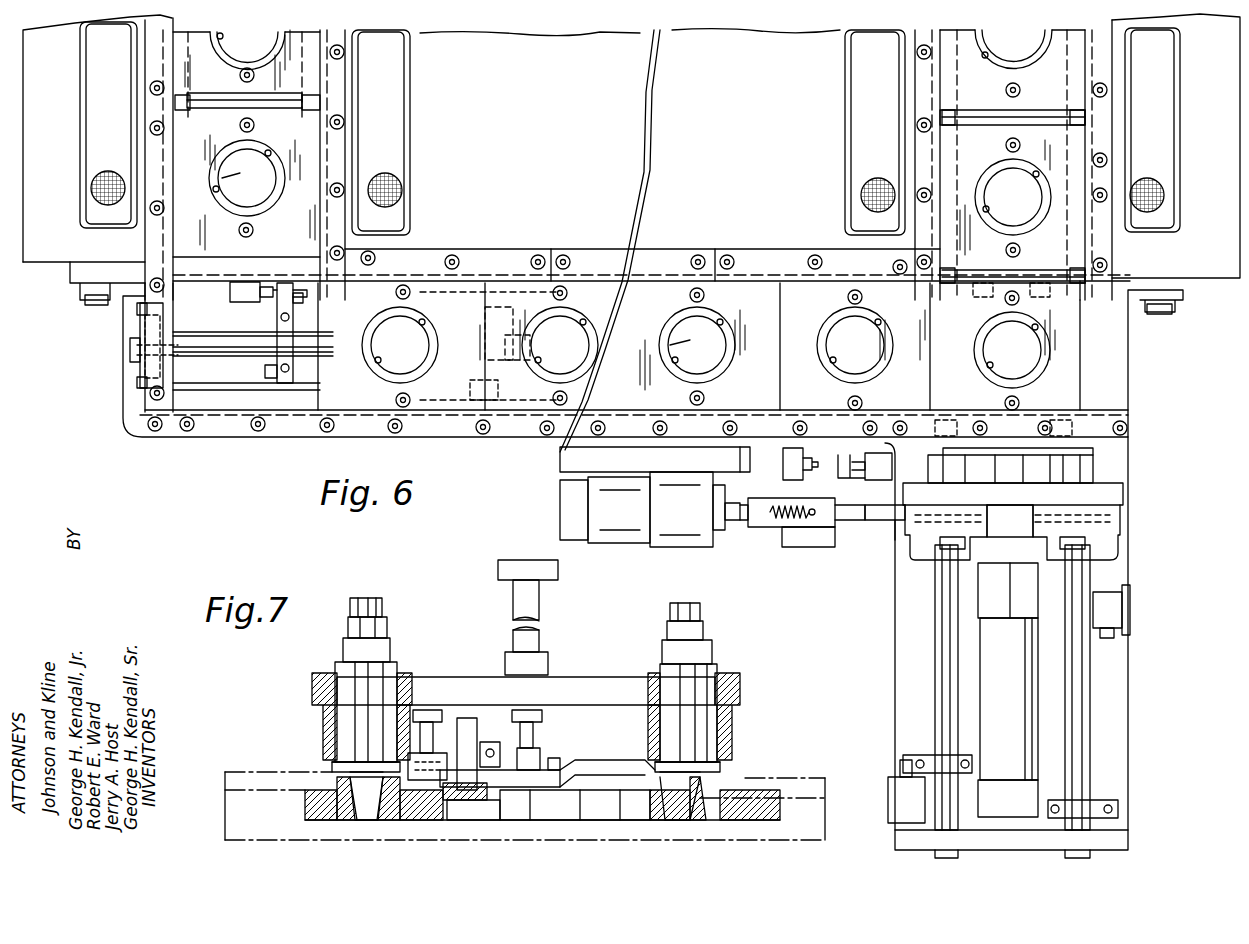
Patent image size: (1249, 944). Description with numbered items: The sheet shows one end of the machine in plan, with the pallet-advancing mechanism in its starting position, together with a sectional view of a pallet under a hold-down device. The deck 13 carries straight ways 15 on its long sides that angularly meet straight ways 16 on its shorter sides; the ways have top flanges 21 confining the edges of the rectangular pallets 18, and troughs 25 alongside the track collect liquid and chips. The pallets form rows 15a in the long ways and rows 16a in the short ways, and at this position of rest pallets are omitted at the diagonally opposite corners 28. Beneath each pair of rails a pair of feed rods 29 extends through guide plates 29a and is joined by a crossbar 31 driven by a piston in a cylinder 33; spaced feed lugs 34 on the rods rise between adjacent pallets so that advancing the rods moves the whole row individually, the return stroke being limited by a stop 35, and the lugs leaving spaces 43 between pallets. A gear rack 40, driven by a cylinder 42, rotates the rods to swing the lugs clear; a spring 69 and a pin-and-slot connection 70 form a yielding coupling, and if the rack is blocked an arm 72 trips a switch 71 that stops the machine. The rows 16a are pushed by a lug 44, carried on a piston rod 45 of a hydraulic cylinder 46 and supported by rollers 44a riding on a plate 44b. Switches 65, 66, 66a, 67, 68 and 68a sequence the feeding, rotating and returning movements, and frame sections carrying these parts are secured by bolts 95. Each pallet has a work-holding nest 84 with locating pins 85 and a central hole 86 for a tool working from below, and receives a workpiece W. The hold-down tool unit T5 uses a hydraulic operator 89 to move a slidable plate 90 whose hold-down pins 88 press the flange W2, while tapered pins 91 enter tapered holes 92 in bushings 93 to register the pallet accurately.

In FIG. 6, the deck 13 is at (586, 58).
In FIG. 6, the straight ways 15 is at (140, 60).
In FIG. 6, the rows of pallets 15a is at (300, 44).
In FIG. 6, the straight ways 16 is at (527, 455).
In FIG. 6, the rows of pallets 16a is at (658, 288).
In FIG. 6, the pallet 18 is at (345, 70).
In FIG. 7, the pallet 18 is at (740, 812).
In FIG. 6, the top flange 21 is at (150, 238).
In FIG. 6, the trough 25 is at (100, 130).
In FIG. 6, the corner 28 is at (214, 430).
In FIG. 6, the feed rod 29 is at (935, 652).
In FIG. 6, the guide plate 29a is at (1143, 529).
In FIG. 6, the crossbar 31 is at (1095, 470).
In FIG. 6, the cylinder 33 is at (1005, 692).
In FIG. 6, the feed lug 34 is at (175, 100).
In FIG. 6, the stop 35 is at (1125, 492).
In FIG. 6, the gear rack 40 is at (893, 525).
In FIG. 6, the cylinder 42 is at (633, 520).
In FIG. 6, the space 43 is at (1040, 116).
In FIG. 6, the lug 44 is at (140, 360).
In FIG. 6, the roller 44a is at (140, 308).
In FIG. 6, the plate 44b is at (252, 400).
In FIG. 6, the piston rod 45 is at (232, 348).
In FIG. 6, the hydraulic cylinder 46 is at (606, 290).
In FIG. 6, the switch 65 is at (1127, 605).
In FIG. 6, the switch 66 is at (790, 466).
In FIG. 6, the switch 66a is at (880, 480).
In FIG. 6, the switch 67 is at (900, 803).
In FIG. 6, the switch 68 is at (480, 400).
In FIG. 6, the switch 68a is at (245, 302).
In FIG. 6, the spring 69 is at (780, 530).
In FIG. 6, the pin-and-slot connection 70 is at (810, 518).
In FIG. 6, the switch 71 is at (812, 540).
In FIG. 6, the arm 72 is at (852, 540).
In FIG. 6, the work-holding nest 84 is at (278, 190).
In FIG. 7, the work-holding nest 84 is at (660, 770).
In FIG. 6, the locating pin 85 is at (822, 358).
In FIG. 6, the central hole 86 is at (232, 178).
In FIG. 7, the hold-down pin 88 is at (440, 720).
In FIG. 7, the hydraulic operator 89 is at (558, 578).
In FIG. 7, the slidable plate 90 is at (605, 677).
In FIG. 7, the tapered pin 91 is at (360, 785).
In FIG. 7, the tapered hole 92 is at (330, 808).
In FIG. 6, the bushing 93 is at (254, 126).
In FIG. 7, the bushing 93 is at (372, 822).
In FIG. 6, the bolt 95 is at (88, 300).
In FIG. 7, the workpiece W is at (650, 760).
In FIG. 7, the flange W2 is at (548, 752).
In FIG. 7, the hold-down tool unit T5 is at (738, 670).